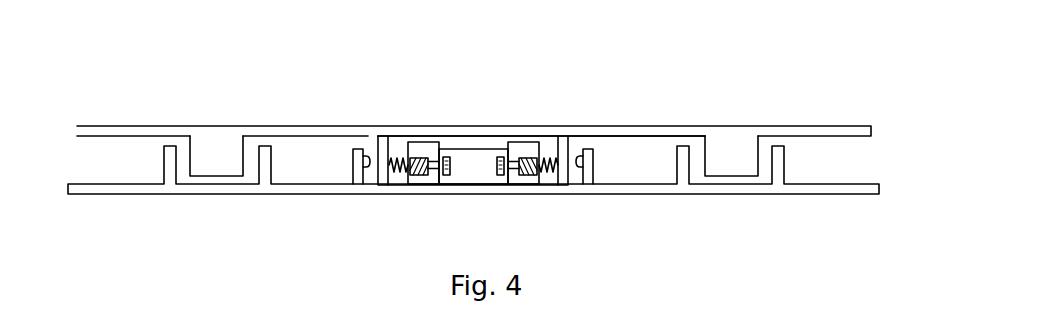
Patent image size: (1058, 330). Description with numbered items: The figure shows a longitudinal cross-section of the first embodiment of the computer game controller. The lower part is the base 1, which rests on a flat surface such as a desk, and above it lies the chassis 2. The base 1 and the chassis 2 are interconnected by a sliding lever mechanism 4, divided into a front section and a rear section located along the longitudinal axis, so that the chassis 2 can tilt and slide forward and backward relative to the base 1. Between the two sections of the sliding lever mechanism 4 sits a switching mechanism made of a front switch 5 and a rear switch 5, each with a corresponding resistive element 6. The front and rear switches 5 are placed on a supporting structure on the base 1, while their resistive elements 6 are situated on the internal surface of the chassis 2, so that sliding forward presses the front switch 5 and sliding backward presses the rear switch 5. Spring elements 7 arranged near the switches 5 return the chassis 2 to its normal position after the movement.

The base 1 is at (330, 187).
The chassis 2 is at (474, 171).
The sliding lever mechanism 4 is at (211, 164).
The switch 5 is at (358, 160).
The resistive element 6 is at (473, 152).
The spring element 7 is at (528, 162).